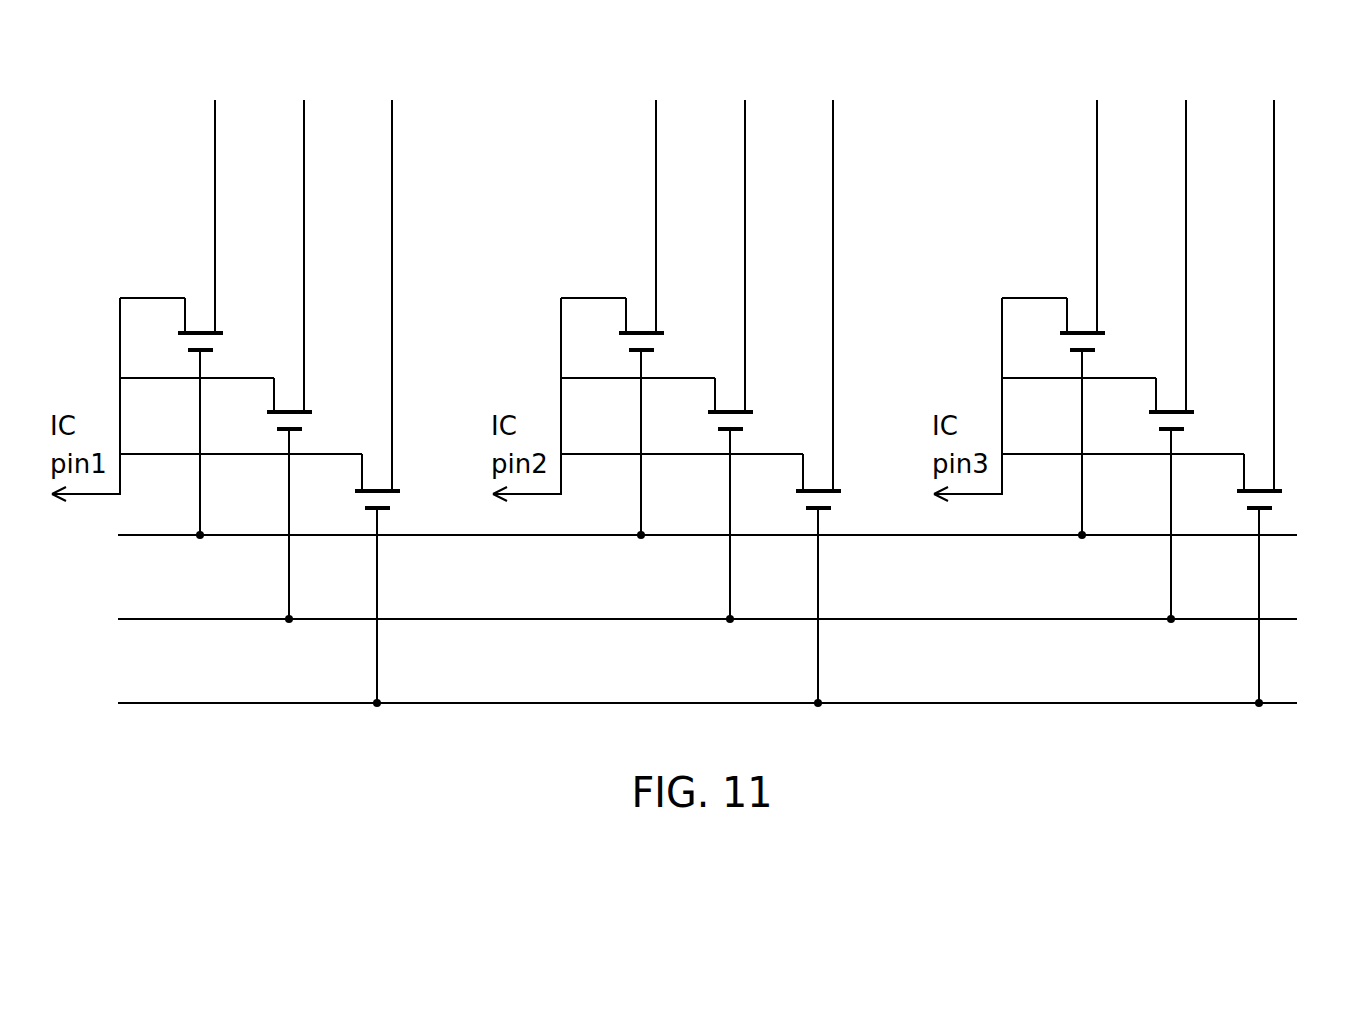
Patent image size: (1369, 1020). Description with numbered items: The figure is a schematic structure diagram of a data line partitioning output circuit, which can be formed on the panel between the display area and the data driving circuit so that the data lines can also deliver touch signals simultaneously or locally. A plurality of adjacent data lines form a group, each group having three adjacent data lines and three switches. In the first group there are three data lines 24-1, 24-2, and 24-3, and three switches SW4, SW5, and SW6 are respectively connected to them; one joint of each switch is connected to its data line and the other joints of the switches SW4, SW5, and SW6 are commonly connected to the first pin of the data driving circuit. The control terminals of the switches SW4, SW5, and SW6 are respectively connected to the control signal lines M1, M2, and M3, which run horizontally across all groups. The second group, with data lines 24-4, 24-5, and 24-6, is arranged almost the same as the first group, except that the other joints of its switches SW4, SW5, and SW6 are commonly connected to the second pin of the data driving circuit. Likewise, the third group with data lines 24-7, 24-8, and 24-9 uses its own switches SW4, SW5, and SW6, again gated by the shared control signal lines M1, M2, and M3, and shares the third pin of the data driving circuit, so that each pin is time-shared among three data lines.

The data line 24-1 is at (214, 200).
The data line 24-2 is at (303, 240).
The data line 24-3 is at (391, 279).
The data line 24-4 is at (655, 200).
The data line 24-5 is at (744, 240).
The data line 24-6 is at (832, 279).
The data line 24-7 is at (1096, 200).
The data line 24-8 is at (1185, 240).
The data line 24-9 is at (1273, 279).
The switch SW4 is at (225, 310).
The switch SW5 is at (314, 389).
The switch SW6 is at (402, 468).
The control signal line M1 is at (730, 533).
The control signal line M2 is at (730, 617).
The control signal line M3 is at (730, 701).